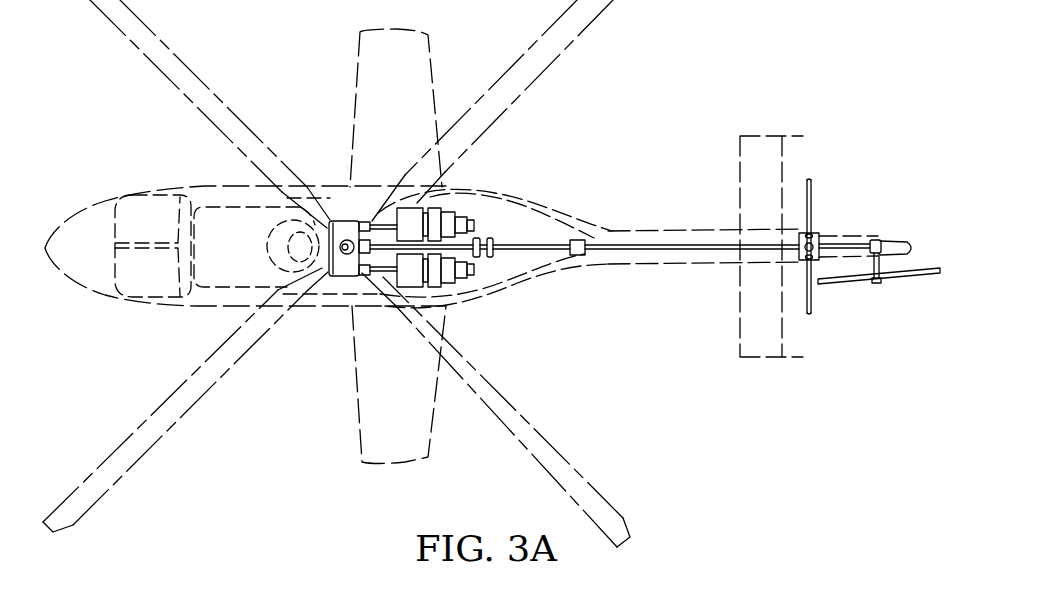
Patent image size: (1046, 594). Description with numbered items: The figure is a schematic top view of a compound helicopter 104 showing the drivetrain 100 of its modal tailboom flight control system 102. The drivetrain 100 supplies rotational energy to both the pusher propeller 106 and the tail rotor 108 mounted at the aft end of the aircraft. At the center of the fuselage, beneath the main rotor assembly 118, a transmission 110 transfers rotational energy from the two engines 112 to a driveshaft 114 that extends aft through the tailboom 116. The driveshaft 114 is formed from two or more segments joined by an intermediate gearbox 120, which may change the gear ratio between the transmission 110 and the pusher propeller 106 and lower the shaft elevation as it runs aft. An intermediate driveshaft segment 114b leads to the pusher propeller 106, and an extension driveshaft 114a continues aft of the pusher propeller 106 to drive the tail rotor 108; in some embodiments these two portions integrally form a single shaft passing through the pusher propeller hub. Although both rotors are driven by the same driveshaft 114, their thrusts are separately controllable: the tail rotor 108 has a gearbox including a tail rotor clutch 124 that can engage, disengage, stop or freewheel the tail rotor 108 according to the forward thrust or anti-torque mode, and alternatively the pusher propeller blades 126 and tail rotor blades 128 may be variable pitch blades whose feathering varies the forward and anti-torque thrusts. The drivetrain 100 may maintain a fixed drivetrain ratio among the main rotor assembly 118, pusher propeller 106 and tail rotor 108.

The drivetrain 100 is at (480, 231).
The modal tailboom flight control system 102 is at (838, 179).
The compound helicopter 104 is at (138, 149).
The pusher propeller 106 is at (811, 179).
The tail rotor 108 is at (929, 268).
The transmission 110 is at (330, 222).
The engines 112 is at (450, 287).
The driveshaft 114 is at (605, 243).
The extension driveshaft 114a is at (840, 243).
The intermediate driveshaft segment 114b is at (683, 251).
The tailboom 116 is at (673, 229).
The main rotor assembly 118 is at (267, 242).
The intermediate gearbox 120 is at (575, 256).
The tail rotor clutch 124 is at (882, 247).
The pusher propeller blades 126 is at (809, 289).
The tail rotor blades 128 is at (907, 276).